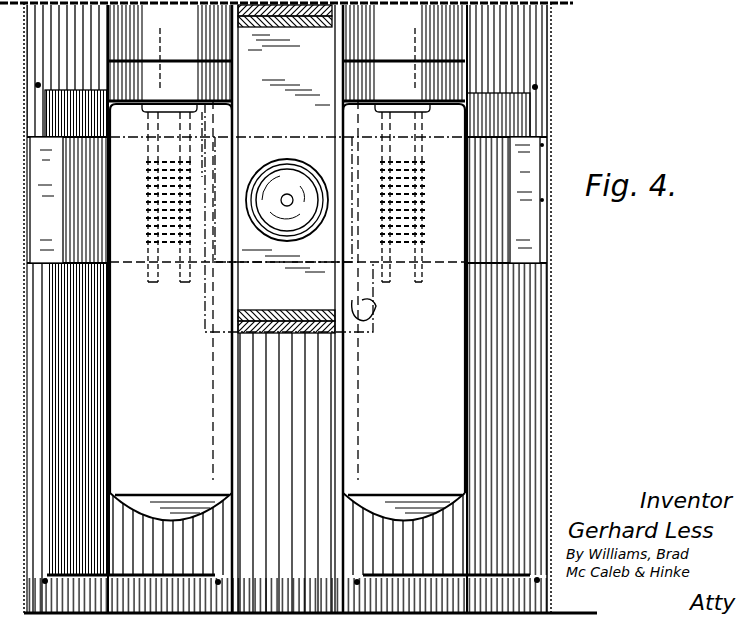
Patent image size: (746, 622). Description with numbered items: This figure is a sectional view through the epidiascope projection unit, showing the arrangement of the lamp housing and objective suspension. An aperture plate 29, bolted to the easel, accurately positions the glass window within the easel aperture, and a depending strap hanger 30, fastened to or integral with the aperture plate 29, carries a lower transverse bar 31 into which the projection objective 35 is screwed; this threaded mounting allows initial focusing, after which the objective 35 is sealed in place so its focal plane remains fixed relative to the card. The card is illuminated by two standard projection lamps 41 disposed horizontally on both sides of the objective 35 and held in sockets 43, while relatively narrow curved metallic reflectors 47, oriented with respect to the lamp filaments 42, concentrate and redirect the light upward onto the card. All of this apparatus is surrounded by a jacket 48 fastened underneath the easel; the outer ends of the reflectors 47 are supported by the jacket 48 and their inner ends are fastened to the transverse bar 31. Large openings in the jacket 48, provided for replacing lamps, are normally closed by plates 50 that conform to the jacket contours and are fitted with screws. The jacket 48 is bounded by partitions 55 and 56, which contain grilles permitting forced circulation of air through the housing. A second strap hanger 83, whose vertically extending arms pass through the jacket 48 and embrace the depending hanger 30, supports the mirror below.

The aperture plate 29 is at (380, 303).
The strap hanger 30 is at (318, 34).
The lower transverse bar 31 is at (268, 114).
The projection lens or objective 35 is at (260, 158).
The projection lamps 41 is at (110, 453).
The lamp filaments 42 is at (167, 268).
The sockets 43 is at (168, 27).
The metallic reflectors 47 is at (88, 214).
The jacket 48 is at (552, 376).
The plates 50 is at (151, 531).
The partition 55 is at (576, 4).
The partition 56 is at (243, 613).
The strap hanger 83 is at (252, 38).